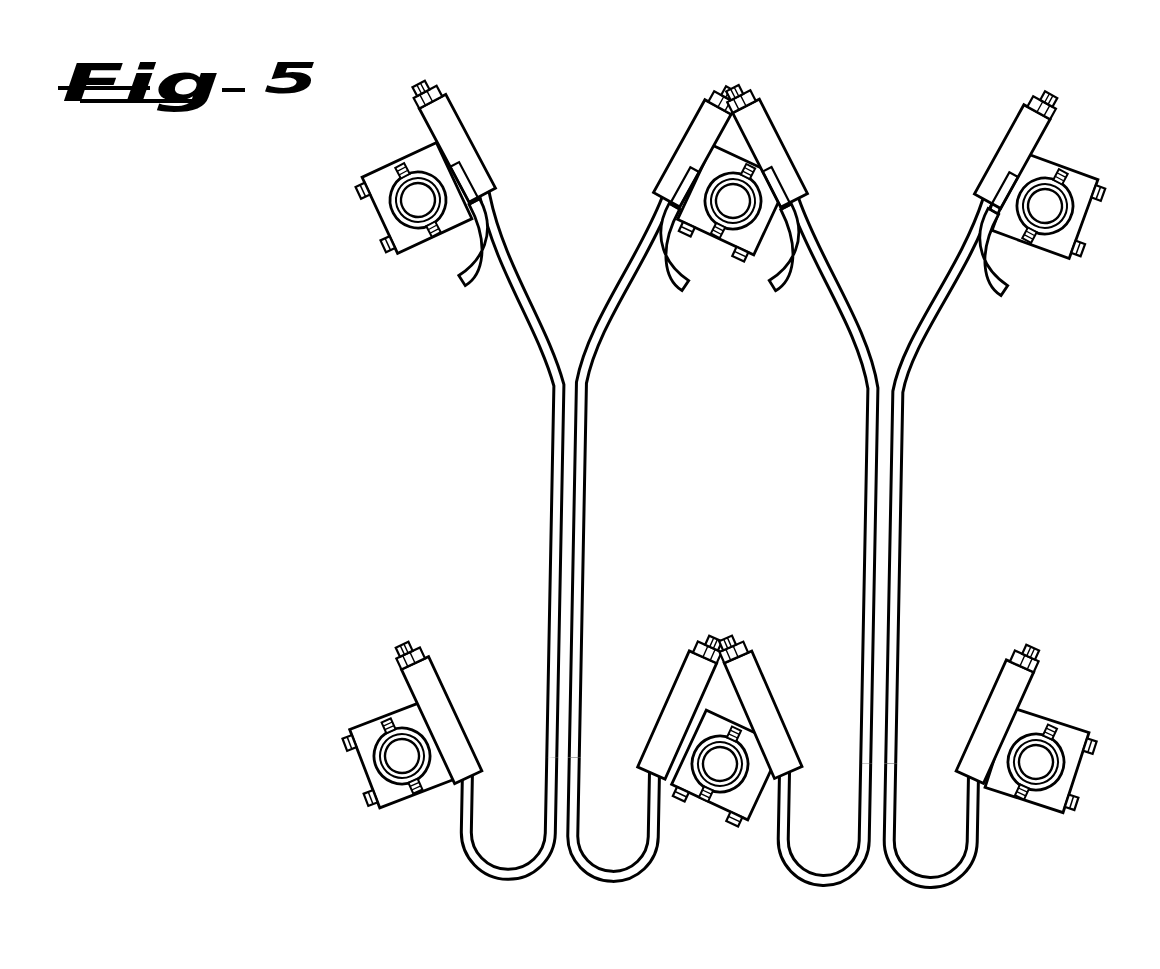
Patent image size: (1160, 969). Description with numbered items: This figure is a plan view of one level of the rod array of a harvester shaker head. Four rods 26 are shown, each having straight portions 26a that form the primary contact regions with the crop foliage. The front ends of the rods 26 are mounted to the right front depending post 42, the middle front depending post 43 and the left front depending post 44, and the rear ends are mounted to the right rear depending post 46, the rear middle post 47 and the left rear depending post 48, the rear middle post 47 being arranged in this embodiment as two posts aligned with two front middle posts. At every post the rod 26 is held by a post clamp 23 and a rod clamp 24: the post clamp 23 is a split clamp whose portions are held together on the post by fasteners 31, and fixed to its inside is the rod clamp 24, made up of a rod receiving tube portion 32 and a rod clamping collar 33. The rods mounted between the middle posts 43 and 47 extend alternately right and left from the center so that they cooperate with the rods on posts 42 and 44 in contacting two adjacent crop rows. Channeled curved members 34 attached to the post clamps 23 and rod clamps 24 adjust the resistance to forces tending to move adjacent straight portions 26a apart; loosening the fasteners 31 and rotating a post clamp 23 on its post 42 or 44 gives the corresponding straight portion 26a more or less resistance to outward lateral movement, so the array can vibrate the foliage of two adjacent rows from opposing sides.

The post clamp 23 is at (400, 255).
The rod clamp 24 is at (715, 466).
The rod 26 is at (596, 886).
The straight portion 26a is at (550, 445).
The fastener 31 is at (376, 247).
The rod receiving tube portion 32 is at (463, 130).
The rod clamping collar 33 is at (418, 106).
The channeled curved member 34 is at (457, 276).
The right front depending post 42 is at (1068, 186).
The middle front depending post 43 is at (772, 183).
The left front depending post 44 is at (376, 172).
The right rear depending post 46 is at (1062, 742).
The rear middle post 47 is at (742, 748).
The left rear depending post 48 is at (368, 768).